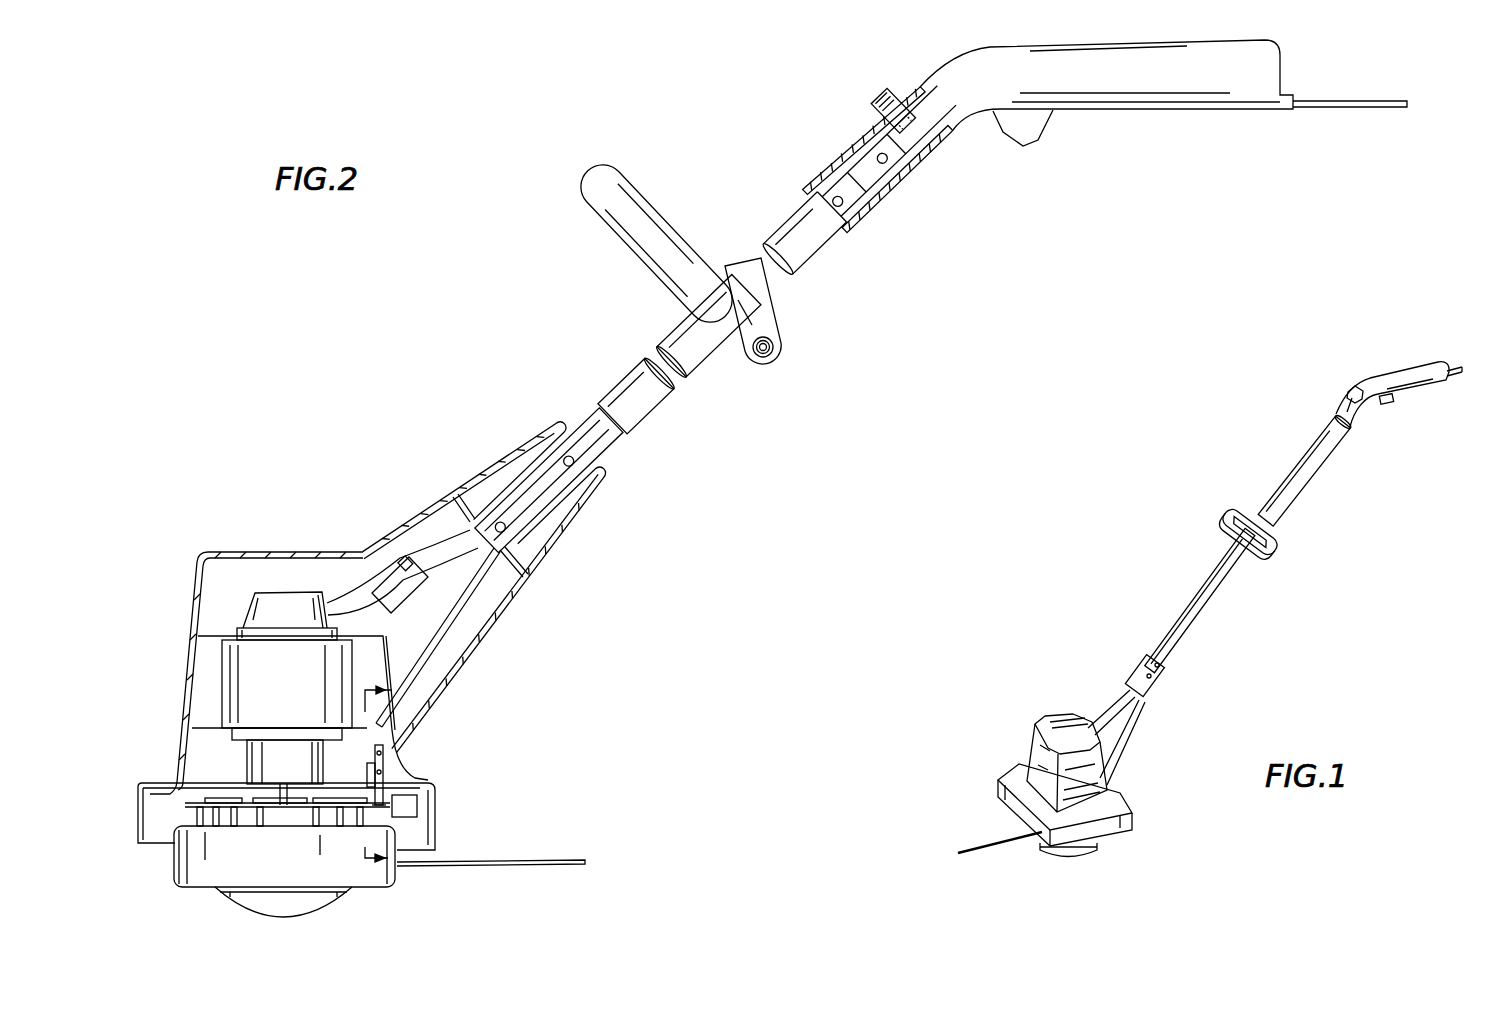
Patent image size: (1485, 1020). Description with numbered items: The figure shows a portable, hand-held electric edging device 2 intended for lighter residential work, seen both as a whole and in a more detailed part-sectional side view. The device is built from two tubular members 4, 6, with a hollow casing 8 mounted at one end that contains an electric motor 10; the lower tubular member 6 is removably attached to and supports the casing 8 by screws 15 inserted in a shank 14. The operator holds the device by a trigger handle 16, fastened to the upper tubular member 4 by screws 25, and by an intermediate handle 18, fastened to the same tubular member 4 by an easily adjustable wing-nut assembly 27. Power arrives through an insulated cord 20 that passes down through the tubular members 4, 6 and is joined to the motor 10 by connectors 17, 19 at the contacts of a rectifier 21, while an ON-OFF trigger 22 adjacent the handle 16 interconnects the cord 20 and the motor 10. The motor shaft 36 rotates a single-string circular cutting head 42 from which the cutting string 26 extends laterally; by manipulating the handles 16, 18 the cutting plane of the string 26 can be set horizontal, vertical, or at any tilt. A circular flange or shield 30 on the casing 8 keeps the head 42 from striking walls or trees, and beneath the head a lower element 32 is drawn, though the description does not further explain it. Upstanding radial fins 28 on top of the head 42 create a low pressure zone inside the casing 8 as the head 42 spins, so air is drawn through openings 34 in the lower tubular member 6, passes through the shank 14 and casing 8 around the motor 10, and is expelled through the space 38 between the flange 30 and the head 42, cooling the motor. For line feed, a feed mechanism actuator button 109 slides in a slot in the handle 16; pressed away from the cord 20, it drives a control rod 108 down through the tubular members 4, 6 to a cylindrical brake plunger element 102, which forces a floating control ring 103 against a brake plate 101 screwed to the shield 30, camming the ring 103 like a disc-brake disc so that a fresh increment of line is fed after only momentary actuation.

In FIG. 1, the portable edging device 2 is at (1096, 500).
In FIG. 2, the tubular member 4 is at (744, 260).
In FIG. 1, the tubular member 4 is at (1293, 473).
In FIG. 2, the tubular member 6 is at (707, 367).
In FIG. 1, the tubular member 6 is at (1215, 600).
In FIG. 2, the casing 8 is at (237, 548).
In FIG. 1, the casing 8 is at (1057, 716).
In FIG. 2, the electric motor 10 is at (230, 662).
In FIG. 2, the shank 14 is at (515, 445).
In FIG. 1, the shank 14 is at (1108, 690).
In FIG. 2, the screws 15 is at (567, 455).
In FIG. 2, the trigger handle 16 is at (1177, 120).
In FIG. 1, the trigger handle 16 is at (1423, 389).
In FIG. 2, the connector 17 is at (440, 543).
In FIG. 2, the intermediate handle 18 is at (603, 211).
In FIG. 1, the intermediate handle 18 is at (1276, 556).
In FIG. 2, the connector 19 is at (350, 593).
In FIG. 2, the cord 20 is at (1360, 110).
In FIG. 1, the cord 20 is at (1455, 368).
In FIG. 2, the rectifier 21 is at (395, 557).
In FIG. 2, the trigger 22 is at (1009, 147).
In FIG. 1, the trigger 22 is at (1385, 404).
In FIG. 2, the screws 25 is at (832, 201).
In FIG. 2, the cutting string 26 is at (557, 867).
In FIG. 1, the cutting string 26 is at (973, 856).
In FIG. 2, the wing-nut assembly 27 is at (778, 348).
In FIG. 2, the fins 28 is at (198, 812).
In FIG. 2, the shield 30 is at (147, 794).
In FIG. 1, the shield 30 is at (1002, 772).
In FIG. 2, the cutting head disc 32 is at (328, 912).
In FIG. 1, the cutting head disc 32 is at (1067, 858).
In FIG. 1, the openings 34 is at (1163, 668).
In FIG. 2, the shaft 36 is at (288, 782).
In FIG. 2, the space 38 is at (178, 797).
In FIG. 2, the string cutting head 42 is at (198, 875).
In FIG. 1, the string cutting head 42 is at (1118, 851).
In FIG. 2, the brake plate 101 is at (440, 805).
In FIG. 2, the brake plunger element 102 is at (397, 763).
In FIG. 2, the control ring 103 is at (302, 808).
In FIG. 2, the control rod 108 is at (884, 196).
In FIG. 2, the feed mechanism actuator button 109 is at (880, 92).
In FIG. 1, the feed mechanism actuator button 109 is at (1352, 386).